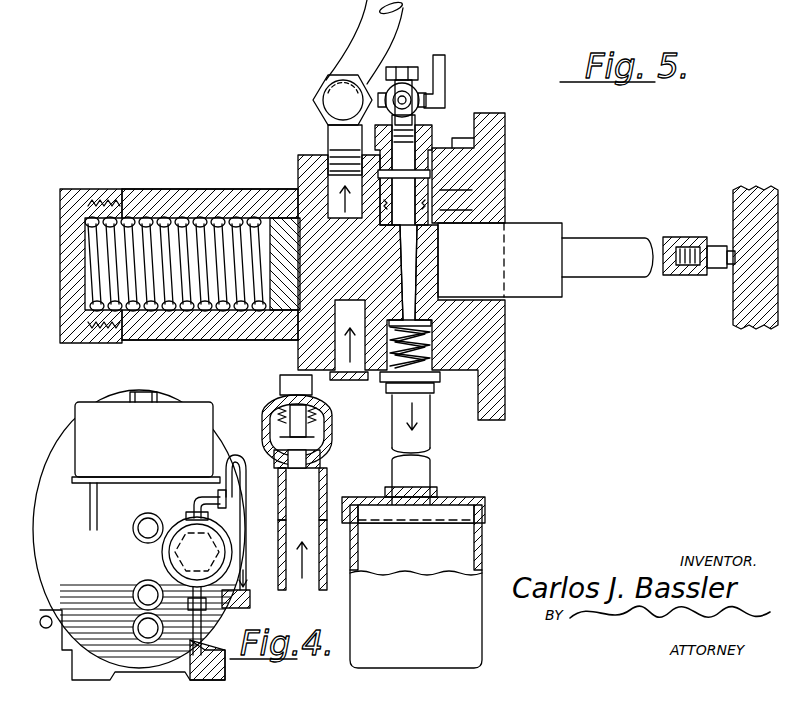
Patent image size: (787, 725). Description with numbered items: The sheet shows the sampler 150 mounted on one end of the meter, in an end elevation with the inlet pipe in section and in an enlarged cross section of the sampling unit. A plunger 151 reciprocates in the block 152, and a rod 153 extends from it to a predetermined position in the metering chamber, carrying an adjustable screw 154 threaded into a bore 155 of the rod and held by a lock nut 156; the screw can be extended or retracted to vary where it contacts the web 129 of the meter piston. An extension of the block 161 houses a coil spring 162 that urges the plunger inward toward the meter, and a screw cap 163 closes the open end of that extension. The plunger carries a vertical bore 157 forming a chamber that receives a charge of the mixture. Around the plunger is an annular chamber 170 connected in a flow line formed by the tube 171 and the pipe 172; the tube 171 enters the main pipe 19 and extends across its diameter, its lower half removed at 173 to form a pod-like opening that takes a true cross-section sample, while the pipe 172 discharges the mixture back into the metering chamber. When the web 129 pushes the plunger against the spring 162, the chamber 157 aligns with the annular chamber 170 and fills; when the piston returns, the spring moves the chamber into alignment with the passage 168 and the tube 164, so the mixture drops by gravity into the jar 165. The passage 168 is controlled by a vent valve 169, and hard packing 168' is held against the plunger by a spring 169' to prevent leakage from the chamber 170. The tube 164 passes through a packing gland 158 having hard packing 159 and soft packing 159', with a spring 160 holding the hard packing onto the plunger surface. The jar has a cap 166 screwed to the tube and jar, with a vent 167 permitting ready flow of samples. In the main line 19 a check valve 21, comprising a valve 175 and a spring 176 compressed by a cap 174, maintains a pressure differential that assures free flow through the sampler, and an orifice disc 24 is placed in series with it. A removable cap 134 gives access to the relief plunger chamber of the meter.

In FIG. 5, the pipe 19 is at (320, 590).
In FIG. 5, the check valve 21 is at (333, 434).
In FIG. 4, the orifice disc 24 is at (210, 402).
In FIG. 5, the web 129 is at (740, 320).
In FIG. 4, the removable cap 134 is at (133, 628).
In FIG. 5, the sampler 150 is at (313, 266).
In FIG. 4, the sampler 150 is at (160, 556).
In FIG. 5, the plunger 151 is at (552, 208).
In FIG. 5, the block 152 is at (505, 312).
In FIG. 5, the rod 153 is at (622, 224).
In FIG. 5, the adjustable screw 154 is at (718, 248).
In FIG. 5, the bore 155 is at (663, 277).
In FIG. 5, the lock nut 156 is at (713, 270).
In FIG. 5, the vertical bore 157 is at (408, 260).
In FIG. 5, the packing gland 158 is at (440, 386).
In FIG. 5, the hard packing 159 is at (479, 345).
In FIG. 5, the soft packing 159' is at (483, 349).
In FIG. 5, the spring 160 is at (440, 356).
In FIG. 5, the block extension 161 is at (142, 189).
In FIG. 5, the coil spring 162 is at (130, 340).
In FIG. 5, the screw cap 163 is at (75, 188).
In FIG. 5, the tube 164 is at (428, 428).
In FIG. 4, the tube 164 is at (212, 655).
In FIG. 5, the jar 165 is at (482, 547).
In FIG. 5, the cap 166 is at (485, 512).
In FIG. 5, the vent 167 is at (452, 496).
In FIG. 5, the passage 168 is at (436, 154).
In FIG. 5, the hard packing 168' is at (501, 187).
In FIG. 5, the vent valve 169 is at (442, 89).
In FIG. 5, the spring 169' is at (505, 134).
In FIG. 5, the annular chamber 170 is at (328, 150).
In FIG. 5, the tube 171 is at (356, 378).
In FIG. 4, the tube 171 is at (232, 598).
In FIG. 5, the pipe 172 is at (345, 56).
In FIG. 4, the pipe 172 is at (194, 500).
In FIG. 5, the pod-like opening 173 is at (323, 505).
In FIG. 5, the cap 174 is at (323, 399).
In FIG. 5, the valve 175 is at (329, 465).
In FIG. 5, the spring 176 is at (276, 396).